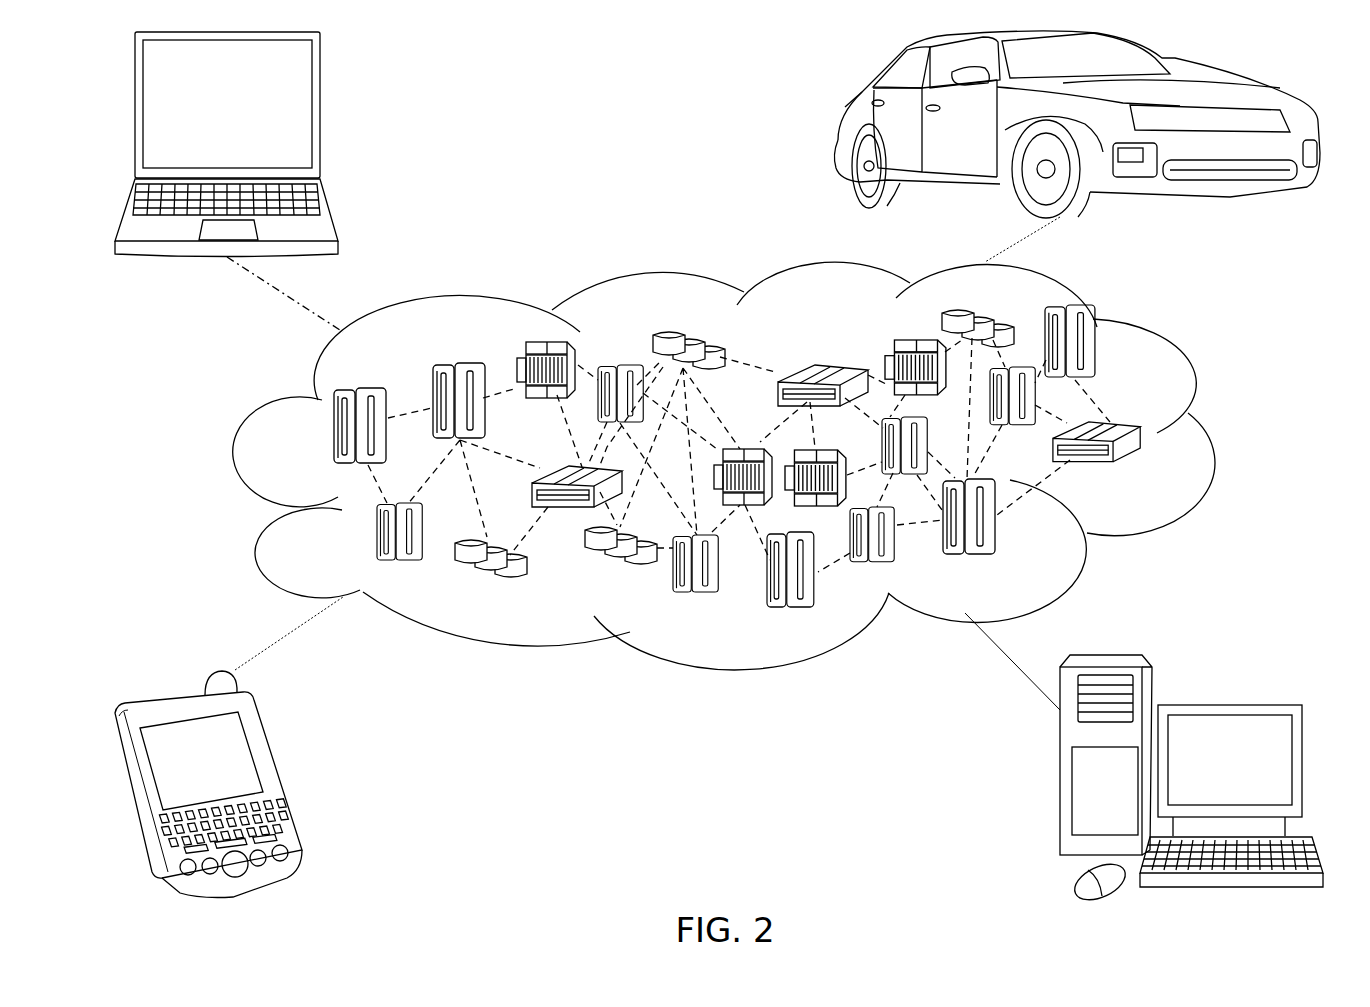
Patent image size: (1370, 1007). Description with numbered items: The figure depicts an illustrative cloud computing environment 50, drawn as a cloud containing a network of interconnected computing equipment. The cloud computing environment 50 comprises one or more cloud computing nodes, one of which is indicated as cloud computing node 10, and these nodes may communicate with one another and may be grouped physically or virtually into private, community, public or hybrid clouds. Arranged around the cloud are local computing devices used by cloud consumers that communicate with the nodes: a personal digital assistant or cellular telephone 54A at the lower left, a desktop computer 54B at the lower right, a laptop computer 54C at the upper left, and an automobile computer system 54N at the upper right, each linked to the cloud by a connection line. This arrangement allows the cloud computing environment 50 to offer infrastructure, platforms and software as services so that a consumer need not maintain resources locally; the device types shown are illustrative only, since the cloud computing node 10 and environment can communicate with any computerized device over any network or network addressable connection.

The laptop computer 54C is at (338, 138).
The automobile computer system 54N is at (843, 127).
The personal digital assistant (PDA) or cellular telephone 54A is at (283, 785).
The desktop computer 54B is at (1060, 822).
The cloud computing environment 50 is at (1218, 450).
The cloud computing node 10 is at (1160, 474).